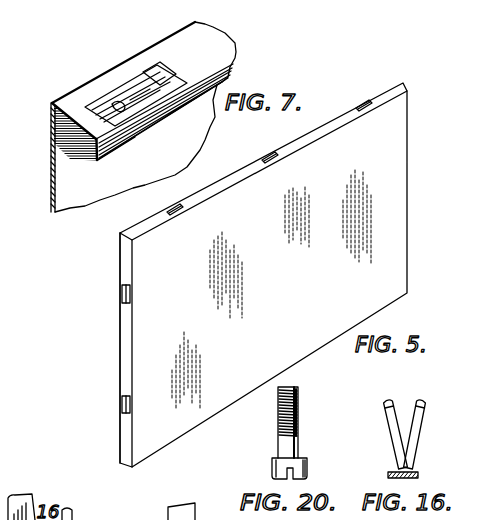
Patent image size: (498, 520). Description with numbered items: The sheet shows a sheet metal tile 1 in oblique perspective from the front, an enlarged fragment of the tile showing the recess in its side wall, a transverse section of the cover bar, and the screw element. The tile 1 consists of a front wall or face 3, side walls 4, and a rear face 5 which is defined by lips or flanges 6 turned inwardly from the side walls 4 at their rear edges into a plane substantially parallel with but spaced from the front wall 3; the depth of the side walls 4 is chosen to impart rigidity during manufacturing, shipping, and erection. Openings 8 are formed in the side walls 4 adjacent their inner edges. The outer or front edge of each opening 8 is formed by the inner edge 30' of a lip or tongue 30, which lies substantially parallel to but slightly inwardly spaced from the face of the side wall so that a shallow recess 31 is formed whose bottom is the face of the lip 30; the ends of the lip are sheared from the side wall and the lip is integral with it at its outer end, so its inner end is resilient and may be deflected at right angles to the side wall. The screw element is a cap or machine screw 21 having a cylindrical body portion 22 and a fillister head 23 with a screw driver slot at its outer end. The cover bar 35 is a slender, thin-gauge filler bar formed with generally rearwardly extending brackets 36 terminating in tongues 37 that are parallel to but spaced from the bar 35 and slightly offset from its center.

In FIG. 7, the tile 1 is at (45, 204).
In FIG. 5, the tile 1 is at (109, 377).
In FIG. 7, the front wall 3 is at (50, 158).
In FIG. 5, the front wall 3 is at (263, 275).
In FIG. 7, the side wall 4 is at (202, 42).
In FIG. 5, the side wall 4 is at (128, 337).
In FIG. 7, the rear face 5 is at (236, 60).
In FIG. 5, the rear face 5 is at (120, 262).
In FIG. 7, the lip or flange 6 is at (138, 136).
In FIG. 7, the opening 8 is at (140, 100).
In FIG. 5, the opening 8 is at (130, 410).
In FIG. 7, the lip or tongue 30 is at (131, 65).
In FIG. 7, the inner edge of lip 30' is at (84, 87).
In FIG. 7, the recess 31 is at (130, 92).
In FIG. 20, the cap or machine screw 21 is at (278, 434).
In FIG. 20, the cylindrical body portion 22 is at (298, 430).
In FIG. 20, the fillister head 23 is at (273, 468).
In FIG. 16, the cover bar 35 is at (416, 478).
In FIG. 16, the bracket 36 is at (392, 430).
In FIG. 16, the tongue 37 is at (387, 401).